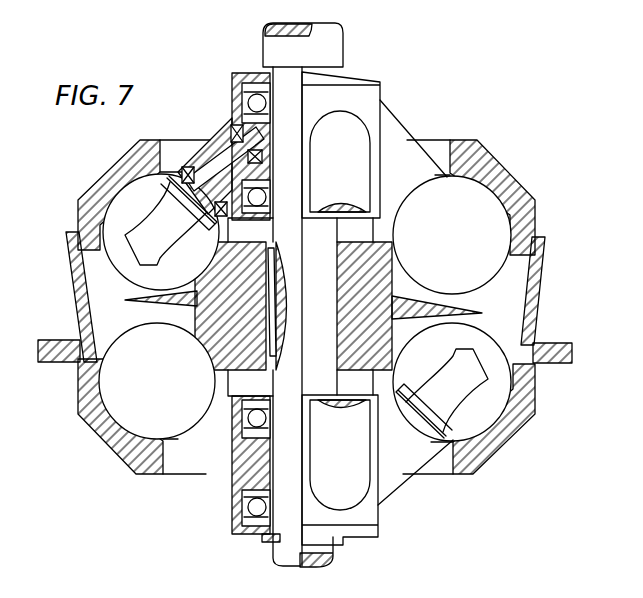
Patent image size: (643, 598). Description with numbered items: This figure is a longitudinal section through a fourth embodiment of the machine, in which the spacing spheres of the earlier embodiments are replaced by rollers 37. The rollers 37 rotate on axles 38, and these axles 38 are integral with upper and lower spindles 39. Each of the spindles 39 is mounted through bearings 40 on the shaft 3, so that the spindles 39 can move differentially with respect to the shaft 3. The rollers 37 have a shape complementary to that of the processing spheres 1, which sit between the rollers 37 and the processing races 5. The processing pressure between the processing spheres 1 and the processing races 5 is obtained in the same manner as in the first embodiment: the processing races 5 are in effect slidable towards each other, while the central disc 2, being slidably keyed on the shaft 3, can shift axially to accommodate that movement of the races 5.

The processing spheres 1 is at (502, 230).
The central disc 2 is at (140, 318).
The shaft 3 is at (283, 553).
The processing races 5 is at (490, 198).
The rollers 37 is at (455, 397).
The axles 38 is at (212, 180).
The spindles 39 is at (378, 102).
The bearings 40 is at (251, 72).